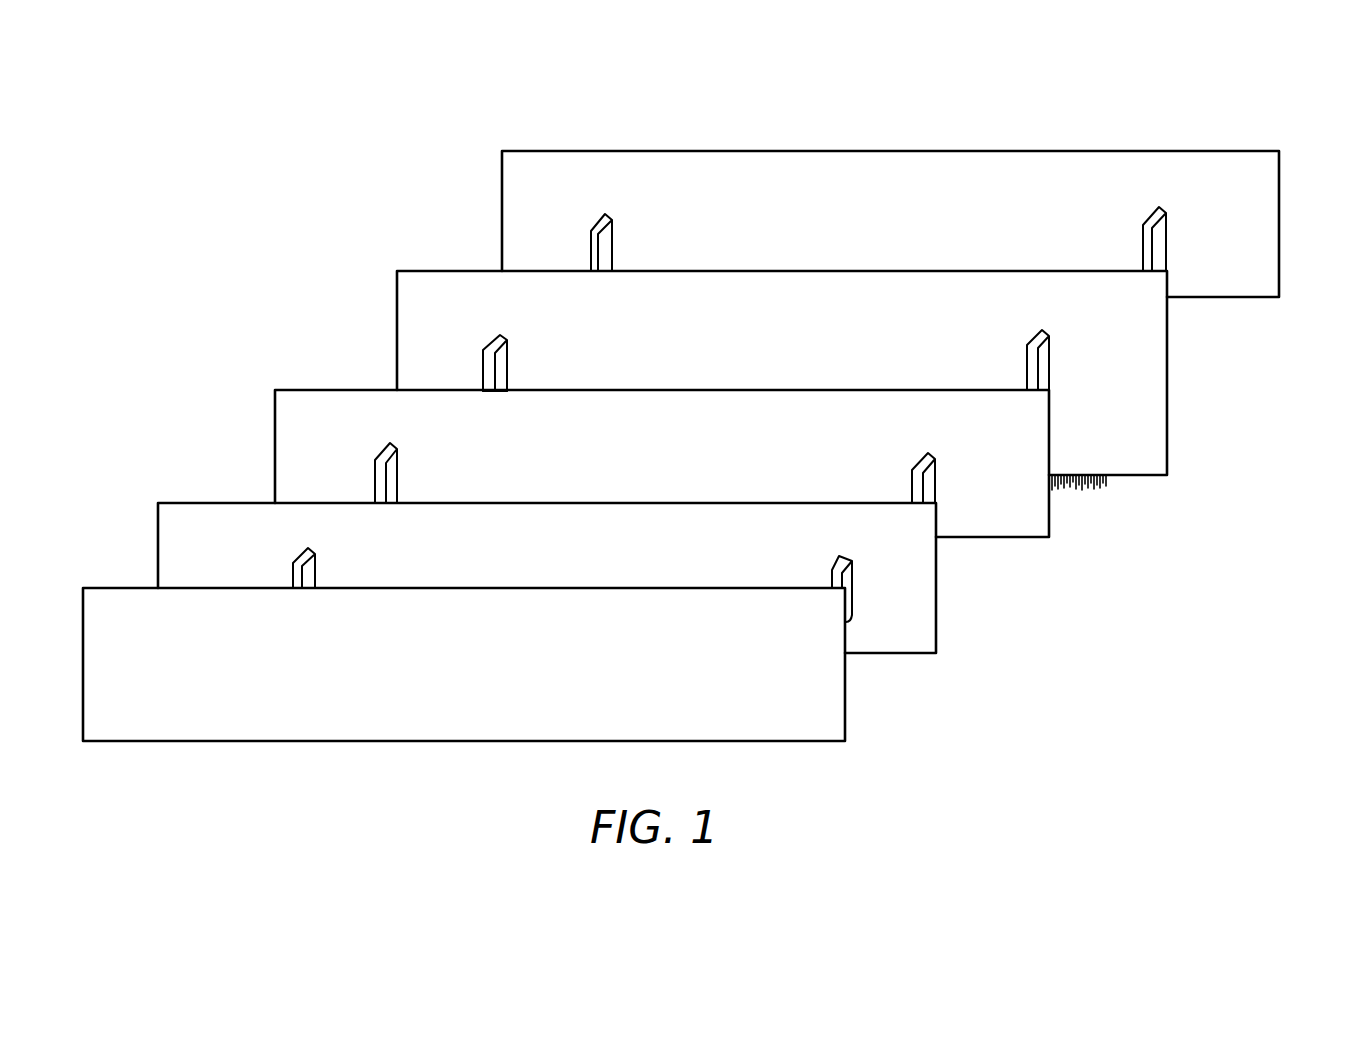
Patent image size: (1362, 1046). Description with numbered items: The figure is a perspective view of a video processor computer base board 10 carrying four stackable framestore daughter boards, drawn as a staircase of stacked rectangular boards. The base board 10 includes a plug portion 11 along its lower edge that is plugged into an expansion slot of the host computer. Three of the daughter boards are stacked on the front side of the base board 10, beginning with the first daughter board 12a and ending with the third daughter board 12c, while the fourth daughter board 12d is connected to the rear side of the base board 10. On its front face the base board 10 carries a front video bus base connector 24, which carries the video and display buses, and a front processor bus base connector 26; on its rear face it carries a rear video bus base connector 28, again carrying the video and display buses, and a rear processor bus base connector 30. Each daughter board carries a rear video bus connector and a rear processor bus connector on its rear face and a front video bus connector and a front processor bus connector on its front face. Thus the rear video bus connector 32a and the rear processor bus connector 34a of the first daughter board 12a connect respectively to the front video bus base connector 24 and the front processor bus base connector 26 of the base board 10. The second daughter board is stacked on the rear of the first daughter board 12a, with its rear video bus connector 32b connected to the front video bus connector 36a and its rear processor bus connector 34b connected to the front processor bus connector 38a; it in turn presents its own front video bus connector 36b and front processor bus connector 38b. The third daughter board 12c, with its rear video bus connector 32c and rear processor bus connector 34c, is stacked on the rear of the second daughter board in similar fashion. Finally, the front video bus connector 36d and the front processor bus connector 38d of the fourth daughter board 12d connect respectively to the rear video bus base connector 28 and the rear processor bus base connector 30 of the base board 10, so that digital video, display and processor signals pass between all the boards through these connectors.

The video processor computer base board 10 is at (1168, 352).
The plug portion 11 is at (1107, 482).
The first daughter board 12a is at (1040, 537).
The third daughter board 12c is at (846, 705).
The fourth daughter board 12d is at (1281, 178).
The front video bus base connector 24 is at (1044, 331).
The front processor bus base connector 26 is at (498, 334).
The rear video bus base connector 28 is at (1145, 268).
The rear processor bus base connector 30 is at (590, 270).
The rear video bus connector 32a is at (1027, 388).
The rear video bus connector 32b is at (912, 500).
The rear video bus connector 32c is at (835, 582).
The rear processor bus first connector 34a is at (503, 390).
The rear processor bus first connector 34b is at (375, 500).
The rear processor bus first connector 34c is at (298, 590).
The front video bus connector 36a is at (930, 455).
The front video bus connector 36b is at (850, 556).
The front video bus connector 36d is at (1163, 210).
The front processor bus second connector 38a is at (395, 445).
The front processor bus second connector 38b is at (312, 548).
The front processor bus second connector 38d is at (607, 215).